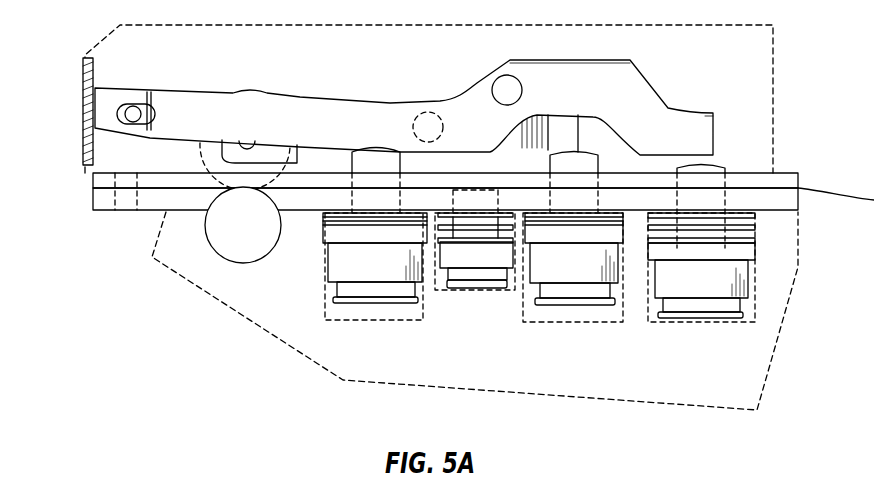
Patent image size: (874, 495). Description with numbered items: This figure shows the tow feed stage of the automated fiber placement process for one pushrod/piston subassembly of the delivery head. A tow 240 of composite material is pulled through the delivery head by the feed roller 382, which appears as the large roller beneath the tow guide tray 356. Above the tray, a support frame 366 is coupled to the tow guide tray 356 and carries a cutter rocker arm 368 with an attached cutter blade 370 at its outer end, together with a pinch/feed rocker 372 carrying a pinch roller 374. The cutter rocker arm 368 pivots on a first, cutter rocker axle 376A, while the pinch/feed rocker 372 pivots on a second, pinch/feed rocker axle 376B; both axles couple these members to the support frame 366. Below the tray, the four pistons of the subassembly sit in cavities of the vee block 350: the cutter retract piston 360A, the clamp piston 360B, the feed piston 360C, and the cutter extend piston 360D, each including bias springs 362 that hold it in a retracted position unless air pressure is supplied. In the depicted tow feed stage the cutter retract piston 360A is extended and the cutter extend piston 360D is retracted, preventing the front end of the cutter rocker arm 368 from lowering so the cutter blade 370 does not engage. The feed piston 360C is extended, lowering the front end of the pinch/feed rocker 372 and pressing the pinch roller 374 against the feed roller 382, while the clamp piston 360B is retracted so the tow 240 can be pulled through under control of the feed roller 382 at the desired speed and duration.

The tow 240 is at (815, 197).
The vee block 350 is at (757, 373).
The tow guide tray 356 is at (790, 202).
The cutter retract piston 360A is at (382, 288).
The clamp piston 360B is at (475, 273).
The feed piston 360C is at (575, 292).
The cutter extend piston 360D is at (755, 292).
The bias springs 362 is at (740, 224).
The support frame 366 is at (763, 62).
The cutter rocker arm 368 is at (668, 108).
The cutter blade 370 is at (83, 87).
The pinch/feed rocker 372 is at (562, 127).
The pinch roller 374 is at (220, 163).
The cutter rocker axle 376A is at (505, 86).
The pinch/feed rocker axle 376B is at (428, 112).
The feed roller 382 is at (233, 250).